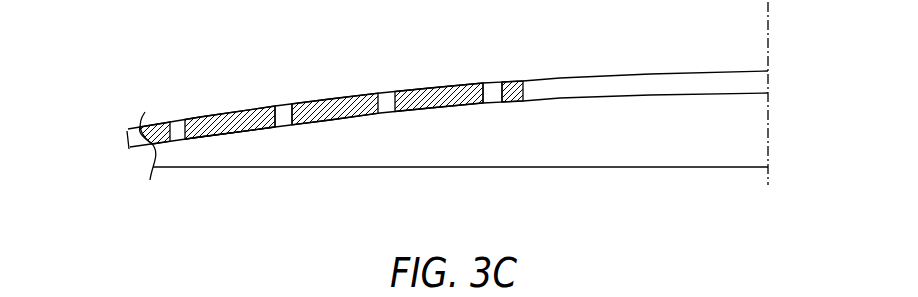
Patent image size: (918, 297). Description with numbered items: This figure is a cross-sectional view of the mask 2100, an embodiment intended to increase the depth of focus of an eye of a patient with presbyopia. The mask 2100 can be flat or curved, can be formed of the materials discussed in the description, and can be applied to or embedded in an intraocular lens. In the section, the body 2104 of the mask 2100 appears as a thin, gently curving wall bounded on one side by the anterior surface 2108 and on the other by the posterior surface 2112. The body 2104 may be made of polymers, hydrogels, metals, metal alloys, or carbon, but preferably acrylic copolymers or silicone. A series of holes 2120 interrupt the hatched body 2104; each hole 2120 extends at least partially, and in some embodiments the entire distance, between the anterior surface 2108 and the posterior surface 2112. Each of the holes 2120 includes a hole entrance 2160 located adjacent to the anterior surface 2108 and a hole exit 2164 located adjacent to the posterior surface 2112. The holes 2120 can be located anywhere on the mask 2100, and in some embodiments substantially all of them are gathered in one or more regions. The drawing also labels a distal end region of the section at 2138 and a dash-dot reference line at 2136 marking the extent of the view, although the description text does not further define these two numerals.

The mask 2100 is at (118, 104).
The body 2104 is at (220, 133).
The anterior surface 2108 is at (223, 117).
The posterior surface 2112 is at (310, 127).
The holes 2120 is at (283, 112).
The reference plane 2136 is at (768, 15).
The distal end 2138 is at (126, 140).
The hole entrance 2160 is at (492, 80).
The hole exit 2164 is at (490, 105).